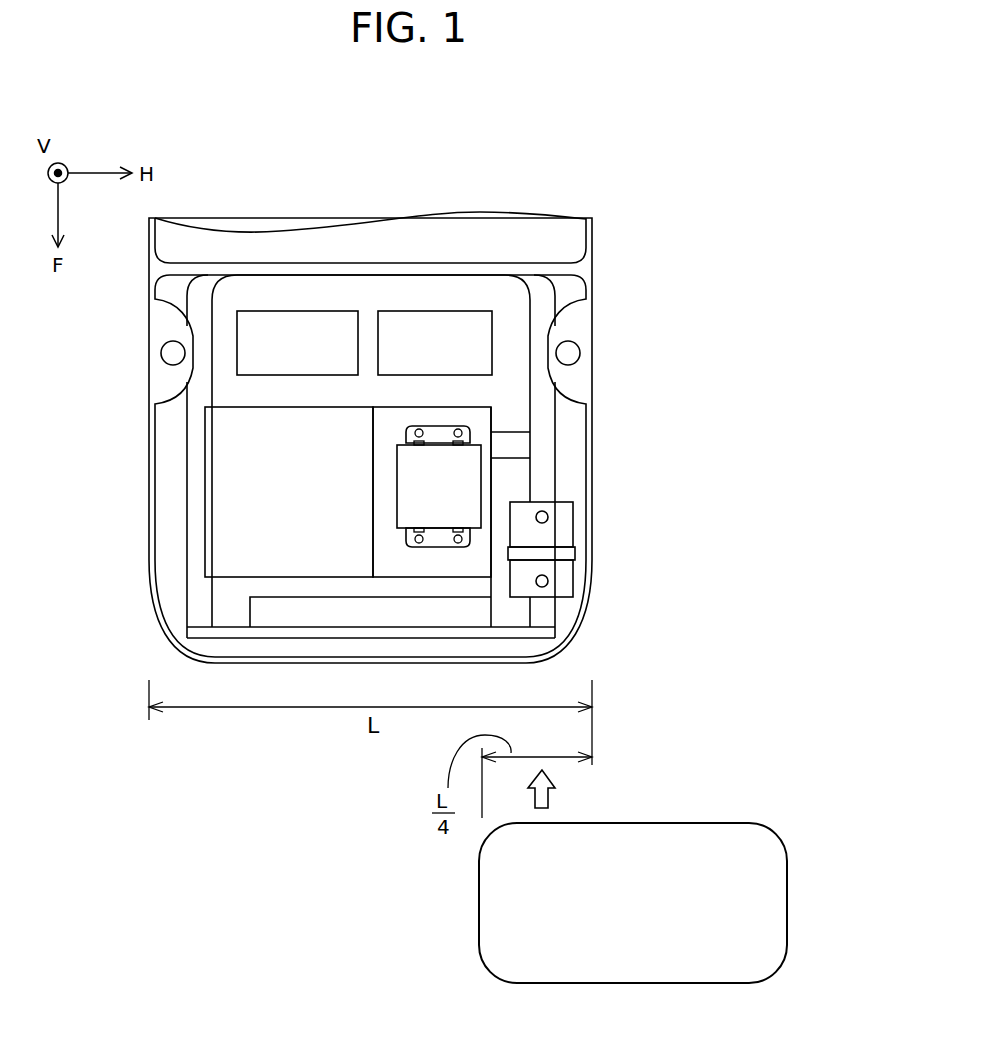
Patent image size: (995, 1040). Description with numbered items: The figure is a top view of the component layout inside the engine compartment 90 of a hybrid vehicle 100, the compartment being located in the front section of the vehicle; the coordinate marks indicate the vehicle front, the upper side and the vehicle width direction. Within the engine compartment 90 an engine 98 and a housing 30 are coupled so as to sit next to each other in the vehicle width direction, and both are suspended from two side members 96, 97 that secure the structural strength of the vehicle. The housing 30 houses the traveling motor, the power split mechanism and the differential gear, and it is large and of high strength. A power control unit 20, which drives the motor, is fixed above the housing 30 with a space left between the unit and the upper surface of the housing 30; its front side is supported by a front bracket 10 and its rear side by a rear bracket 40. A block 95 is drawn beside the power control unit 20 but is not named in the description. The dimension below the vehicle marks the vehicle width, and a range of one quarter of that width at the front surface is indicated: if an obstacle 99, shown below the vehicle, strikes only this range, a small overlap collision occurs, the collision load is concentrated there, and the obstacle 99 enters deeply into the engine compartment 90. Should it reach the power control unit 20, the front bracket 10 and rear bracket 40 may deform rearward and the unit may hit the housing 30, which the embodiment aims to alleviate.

The hybrid vehicle 100 is at (707, 122).
The engine compartment 90 is at (503, 317).
The housing 30 is at (395, 423).
The rear bracket 40 is at (465, 430).
The side member 96 is at (543, 450).
The power control unit 20 is at (468, 488).
The front bracket 10 is at (468, 538).
The connector block 95 is at (565, 580).
The engine 98 is at (232, 476).
The side member 97 is at (198, 607).
The obstacle 99 is at (493, 930).